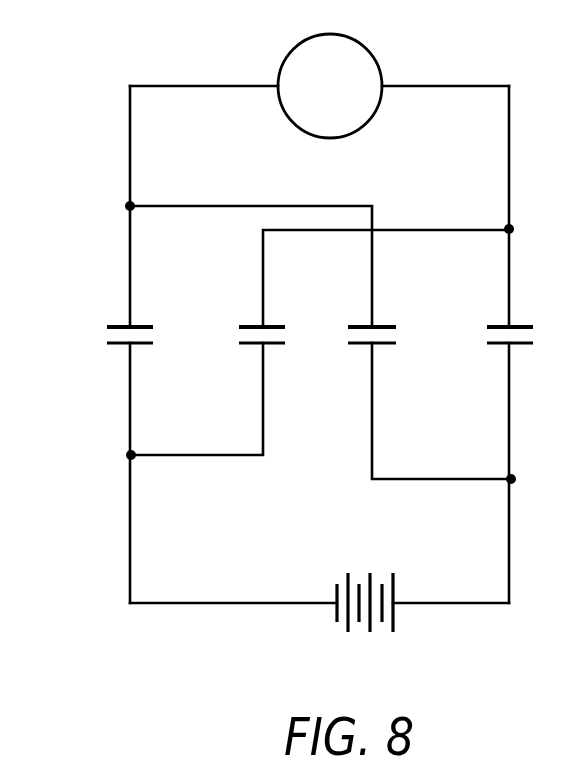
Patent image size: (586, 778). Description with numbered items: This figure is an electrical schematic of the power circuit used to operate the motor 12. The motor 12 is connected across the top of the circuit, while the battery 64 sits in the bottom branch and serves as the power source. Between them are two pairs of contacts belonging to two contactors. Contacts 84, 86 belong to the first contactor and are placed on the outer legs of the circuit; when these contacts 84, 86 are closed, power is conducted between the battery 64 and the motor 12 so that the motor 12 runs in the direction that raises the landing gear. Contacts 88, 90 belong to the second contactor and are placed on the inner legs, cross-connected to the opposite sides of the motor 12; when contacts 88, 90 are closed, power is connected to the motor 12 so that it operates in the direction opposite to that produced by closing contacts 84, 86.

The motor 12 is at (357, 42).
The contact of contactor C1 84 is at (120, 325).
The contact of contactor C2 88 is at (252, 325).
The contact of contactor C2 90 is at (362, 325).
The contact of contactor C1 86 is at (500, 325).
The battery 64 is at (393, 558).